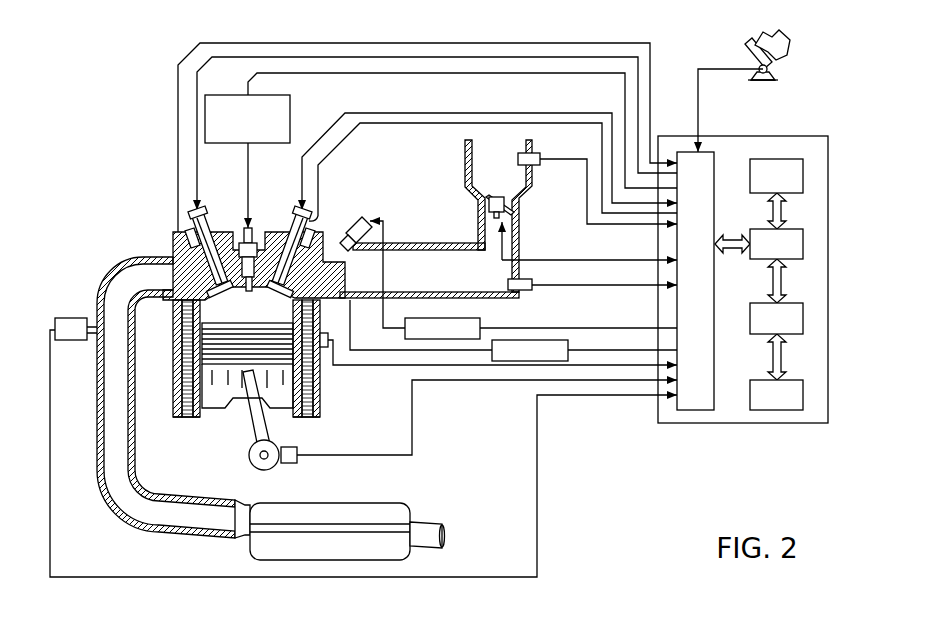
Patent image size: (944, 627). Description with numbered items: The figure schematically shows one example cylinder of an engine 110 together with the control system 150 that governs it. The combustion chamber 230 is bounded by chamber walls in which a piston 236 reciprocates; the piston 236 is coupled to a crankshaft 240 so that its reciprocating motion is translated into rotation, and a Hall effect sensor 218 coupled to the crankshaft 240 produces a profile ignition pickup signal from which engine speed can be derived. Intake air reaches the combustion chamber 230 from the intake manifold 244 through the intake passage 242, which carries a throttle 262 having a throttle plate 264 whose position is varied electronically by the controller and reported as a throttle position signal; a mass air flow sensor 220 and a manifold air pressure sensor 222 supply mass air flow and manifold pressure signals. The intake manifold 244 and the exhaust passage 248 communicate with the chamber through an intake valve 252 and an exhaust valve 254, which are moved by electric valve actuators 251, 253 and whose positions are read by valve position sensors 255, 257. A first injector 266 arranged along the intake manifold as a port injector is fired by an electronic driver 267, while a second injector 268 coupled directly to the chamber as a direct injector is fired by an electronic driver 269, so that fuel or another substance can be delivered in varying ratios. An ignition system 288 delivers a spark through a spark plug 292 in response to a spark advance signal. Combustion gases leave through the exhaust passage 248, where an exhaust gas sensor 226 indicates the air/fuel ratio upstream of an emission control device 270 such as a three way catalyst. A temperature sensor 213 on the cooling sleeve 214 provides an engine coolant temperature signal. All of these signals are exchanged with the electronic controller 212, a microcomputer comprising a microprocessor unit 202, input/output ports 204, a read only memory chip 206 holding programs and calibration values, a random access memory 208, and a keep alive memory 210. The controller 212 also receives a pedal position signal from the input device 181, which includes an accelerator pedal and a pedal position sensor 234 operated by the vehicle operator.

The engine 110 is at (133, 196).
The control system 150 is at (865, 196).
The input device 181 is at (748, 52).
The microprocessor unit 202 is at (803, 243).
The input/output ports 204 is at (716, 160).
The read only memory chip 206 is at (803, 172).
The random access memory 208 is at (803, 318).
The keep alive memory 210 is at (803, 392).
The electronic controller 212 is at (828, 138).
The temperature sensor 213 is at (324, 348).
The cooling sleeve 214 is at (318, 382).
The Hall effect sensor 218 is at (292, 465).
The mass air flow sensor 220 is at (540, 153).
The manifold air pressure sensor 222 is at (530, 291).
The exhaust gas sensor 226 is at (55, 322).
The combustion chamber 230 is at (245, 325).
The pedal position sensor 234 is at (775, 70).
The piston 236 is at (247, 395).
The crankshaft 240 is at (256, 465).
The intake passage 242 is at (489, 178).
The intake manifold 244 is at (405, 280).
The exhaust passage 248 is at (137, 286).
The electric valve actuator 251 is at (290, 210).
The intake valve 252 is at (292, 290).
The electric valve actuator 253 is at (210, 210).
The exhaust valve 254 is at (213, 288).
The valve position sensor 255 is at (310, 222).
The valve position sensor 257 is at (183, 222).
The throttle 262 is at (515, 204).
The throttle plate 264 is at (487, 205).
The first injector 266 is at (354, 222).
The electronic driver 267 is at (465, 318).
The second injector 268 is at (325, 334).
The electronic driver 269 is at (568, 345).
The emission control device 270 is at (383, 503).
The ignition system 288 is at (213, 95).
The spark plug 292 is at (250, 228).